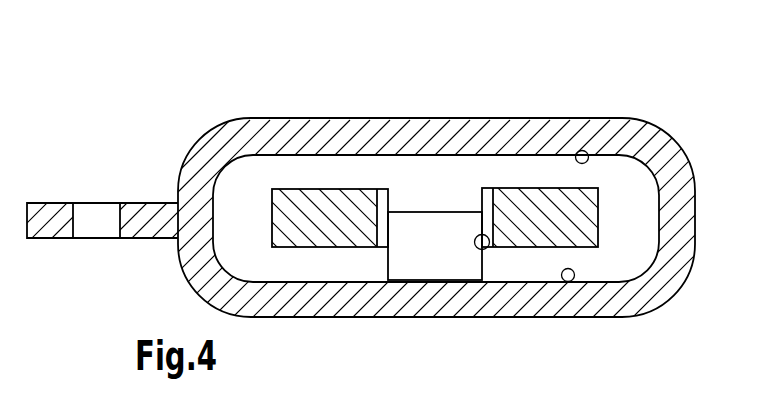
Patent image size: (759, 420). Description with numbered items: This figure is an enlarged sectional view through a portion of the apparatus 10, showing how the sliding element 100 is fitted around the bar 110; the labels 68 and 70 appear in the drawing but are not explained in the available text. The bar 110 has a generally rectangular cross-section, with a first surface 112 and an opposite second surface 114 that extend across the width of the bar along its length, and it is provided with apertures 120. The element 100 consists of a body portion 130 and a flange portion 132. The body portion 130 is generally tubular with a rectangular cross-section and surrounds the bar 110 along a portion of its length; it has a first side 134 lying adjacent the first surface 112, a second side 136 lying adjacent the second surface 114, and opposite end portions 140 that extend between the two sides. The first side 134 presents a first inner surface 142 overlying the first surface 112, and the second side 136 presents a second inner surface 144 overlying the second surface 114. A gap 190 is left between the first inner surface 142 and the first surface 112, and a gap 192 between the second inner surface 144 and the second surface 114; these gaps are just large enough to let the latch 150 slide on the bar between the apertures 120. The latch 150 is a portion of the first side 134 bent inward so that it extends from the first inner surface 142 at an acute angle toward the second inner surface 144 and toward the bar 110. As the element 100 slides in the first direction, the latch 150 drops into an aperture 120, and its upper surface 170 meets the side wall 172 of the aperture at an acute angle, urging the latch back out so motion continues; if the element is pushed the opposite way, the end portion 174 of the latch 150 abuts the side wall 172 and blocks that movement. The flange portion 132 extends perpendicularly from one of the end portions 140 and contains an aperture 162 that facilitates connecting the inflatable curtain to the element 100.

The electronic device assembly 10 is at (160, 86).
The housing 68 is at (207, 106).
The first electrode 70 is at (293, 210).
The element 100 is at (328, 135).
The bar 110 is at (308, 200).
The first surface 112 is at (322, 250).
The second surface 114 is at (543, 185).
The apertures 120 is at (448, 200).
The body portion 130 is at (413, 297).
The flange portion 132 is at (147, 223).
The first side 134 is at (468, 297).
The second side 136 is at (521, 135).
The end portions 140 is at (203, 187).
The first inner surface 142 is at (571, 282).
The second inner surface 144 is at (580, 151).
The latch 150 is at (408, 230).
The aperture 162 is at (93, 222).
The upper surface 170 is at (458, 228).
The side wall 172 is at (483, 258).
The end portion 174 is at (425, 212).
The gap 190 is at (350, 263).
The gap 192 is at (410, 172).